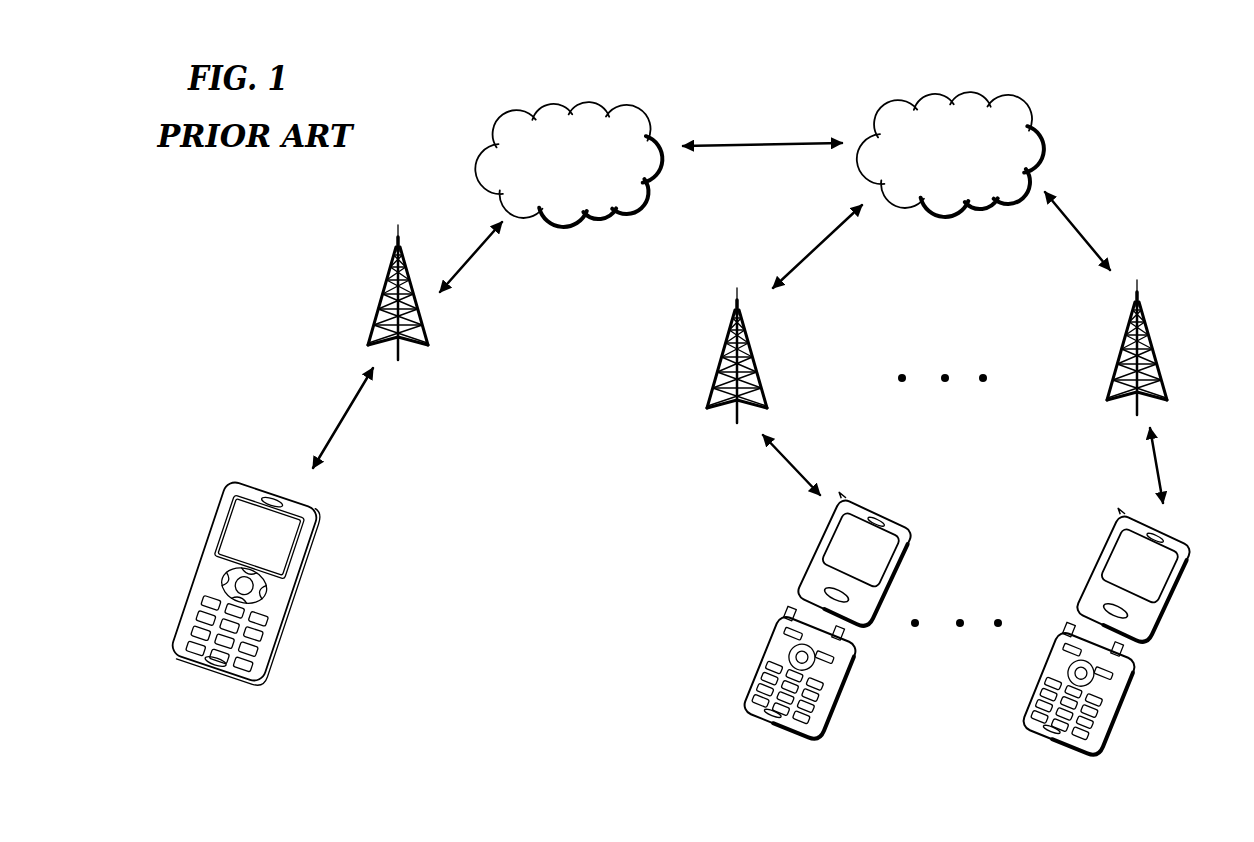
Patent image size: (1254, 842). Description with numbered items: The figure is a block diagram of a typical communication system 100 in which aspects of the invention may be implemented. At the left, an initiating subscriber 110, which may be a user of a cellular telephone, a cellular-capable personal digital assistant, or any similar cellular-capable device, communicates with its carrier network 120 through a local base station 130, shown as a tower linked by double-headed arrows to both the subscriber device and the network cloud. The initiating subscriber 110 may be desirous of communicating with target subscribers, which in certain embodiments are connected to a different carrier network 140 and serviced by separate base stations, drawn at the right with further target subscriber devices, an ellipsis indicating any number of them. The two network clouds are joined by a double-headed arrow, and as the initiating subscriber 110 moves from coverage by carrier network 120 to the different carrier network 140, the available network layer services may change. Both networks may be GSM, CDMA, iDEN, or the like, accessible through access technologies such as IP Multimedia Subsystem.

The communication system 100 is at (1115, 97).
The initiating subscriber 110 is at (249, 477).
The carrier network 120 is at (593, 101).
The local base station 130 is at (398, 224).
The carrier network 140 is at (976, 91).